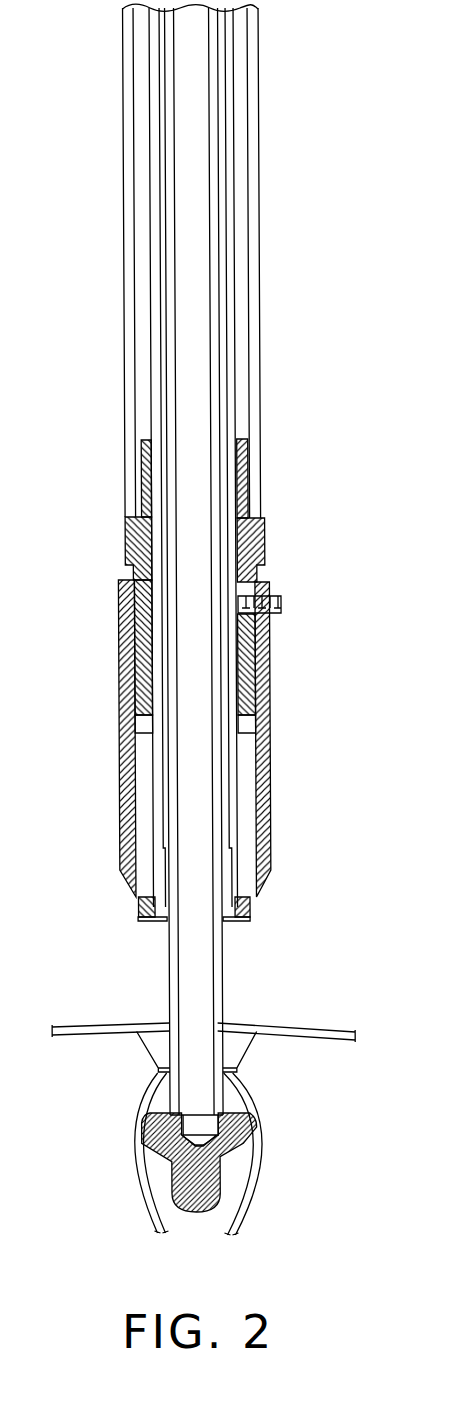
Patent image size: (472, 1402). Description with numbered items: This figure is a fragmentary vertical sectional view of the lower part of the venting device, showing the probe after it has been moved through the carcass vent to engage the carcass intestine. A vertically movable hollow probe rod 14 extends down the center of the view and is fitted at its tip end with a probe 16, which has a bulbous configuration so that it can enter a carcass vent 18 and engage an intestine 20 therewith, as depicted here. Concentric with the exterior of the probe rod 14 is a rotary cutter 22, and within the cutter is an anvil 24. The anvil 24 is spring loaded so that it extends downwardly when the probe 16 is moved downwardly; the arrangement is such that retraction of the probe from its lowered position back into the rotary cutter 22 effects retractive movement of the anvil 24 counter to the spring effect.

The hollow probe rod 14 is at (188, 318).
The probe 16 is at (207, 1207).
The carcass vent 18 is at (150, 1053).
The intestine 20 is at (253, 1193).
The rotary cutter 22 is at (270, 817).
The anvil 24 is at (233, 920).